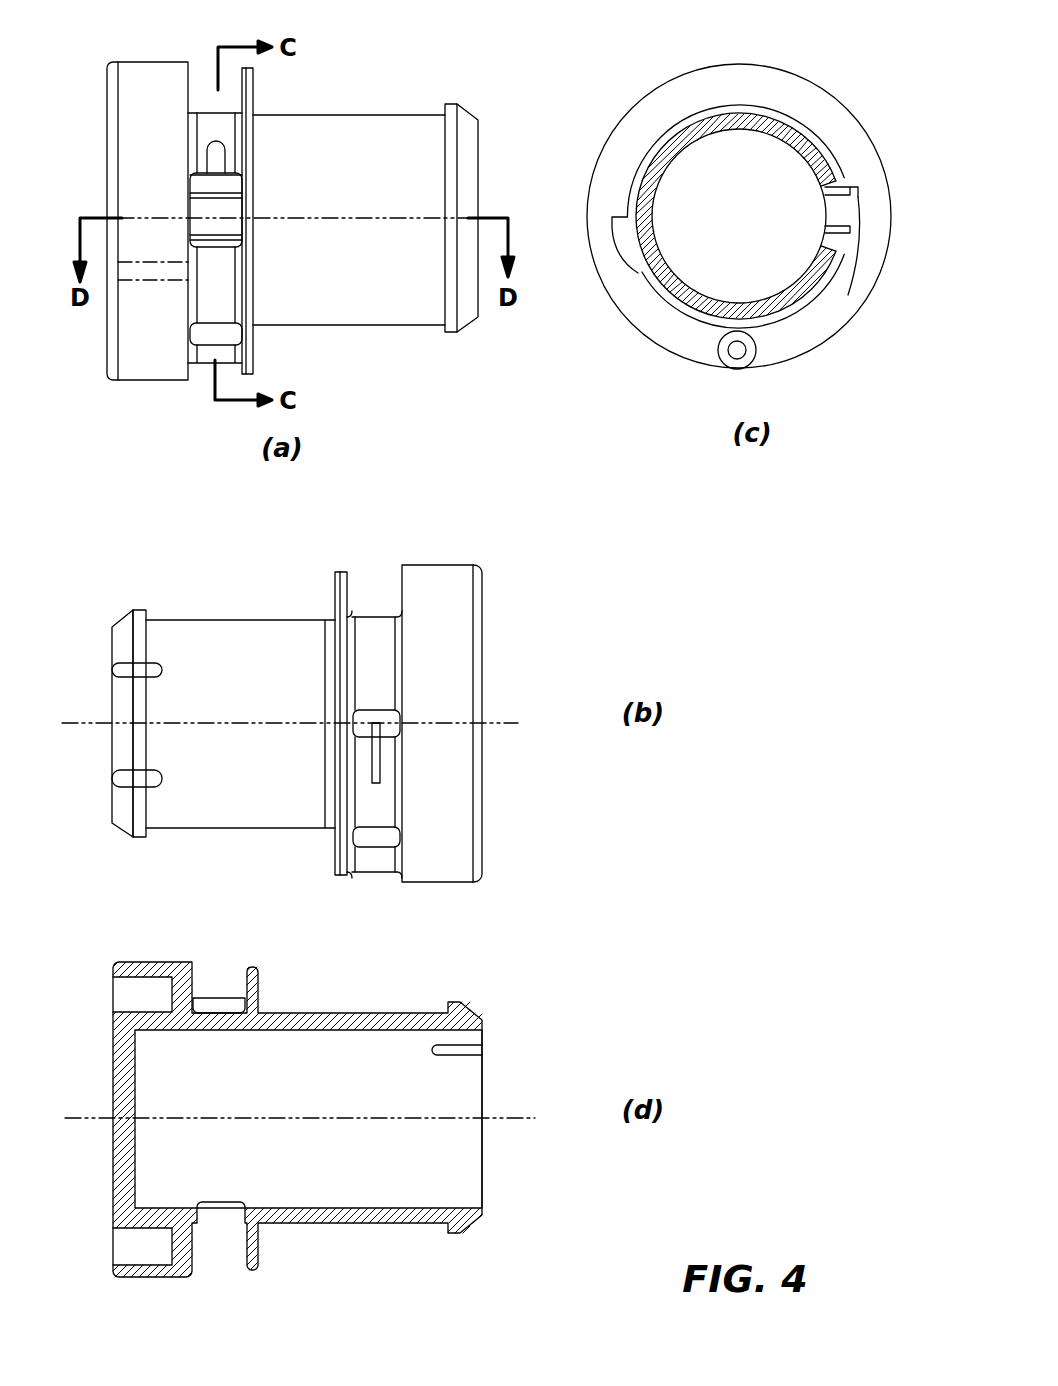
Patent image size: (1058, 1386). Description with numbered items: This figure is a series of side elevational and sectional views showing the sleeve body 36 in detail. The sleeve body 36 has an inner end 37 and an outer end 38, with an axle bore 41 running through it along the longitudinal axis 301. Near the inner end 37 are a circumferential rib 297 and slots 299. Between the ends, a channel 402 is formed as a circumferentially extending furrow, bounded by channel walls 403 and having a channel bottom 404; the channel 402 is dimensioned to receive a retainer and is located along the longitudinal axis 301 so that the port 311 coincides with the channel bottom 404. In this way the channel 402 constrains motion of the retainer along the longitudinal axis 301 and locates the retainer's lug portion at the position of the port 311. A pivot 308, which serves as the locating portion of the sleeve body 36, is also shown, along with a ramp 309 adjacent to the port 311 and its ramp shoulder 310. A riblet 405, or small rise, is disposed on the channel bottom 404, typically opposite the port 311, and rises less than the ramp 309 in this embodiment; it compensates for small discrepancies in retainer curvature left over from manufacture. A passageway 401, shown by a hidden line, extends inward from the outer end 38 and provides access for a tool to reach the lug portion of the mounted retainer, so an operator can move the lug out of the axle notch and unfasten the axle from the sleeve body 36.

The sleeve body 36 is at (332, 133).
The inner end 37 is at (480, 130).
The outer end 38 is at (107, 140).
The axle bore 41 is at (488, 178).
The circumferential rib 297 is at (465, 328).
The slots 299 is at (112, 665).
The longitudinal axis 301 is at (515, 723).
The pivot 308 is at (208, 335).
The ramp 309 is at (856, 175).
The ramp shoulder 310 is at (848, 290).
The port 311 is at (197, 213).
The passageway 401 is at (140, 282).
The channel 402 is at (370, 600).
The channel walls 403 is at (350, 587).
The channel bottom 404 is at (383, 862).
The riblet 405 is at (377, 760).